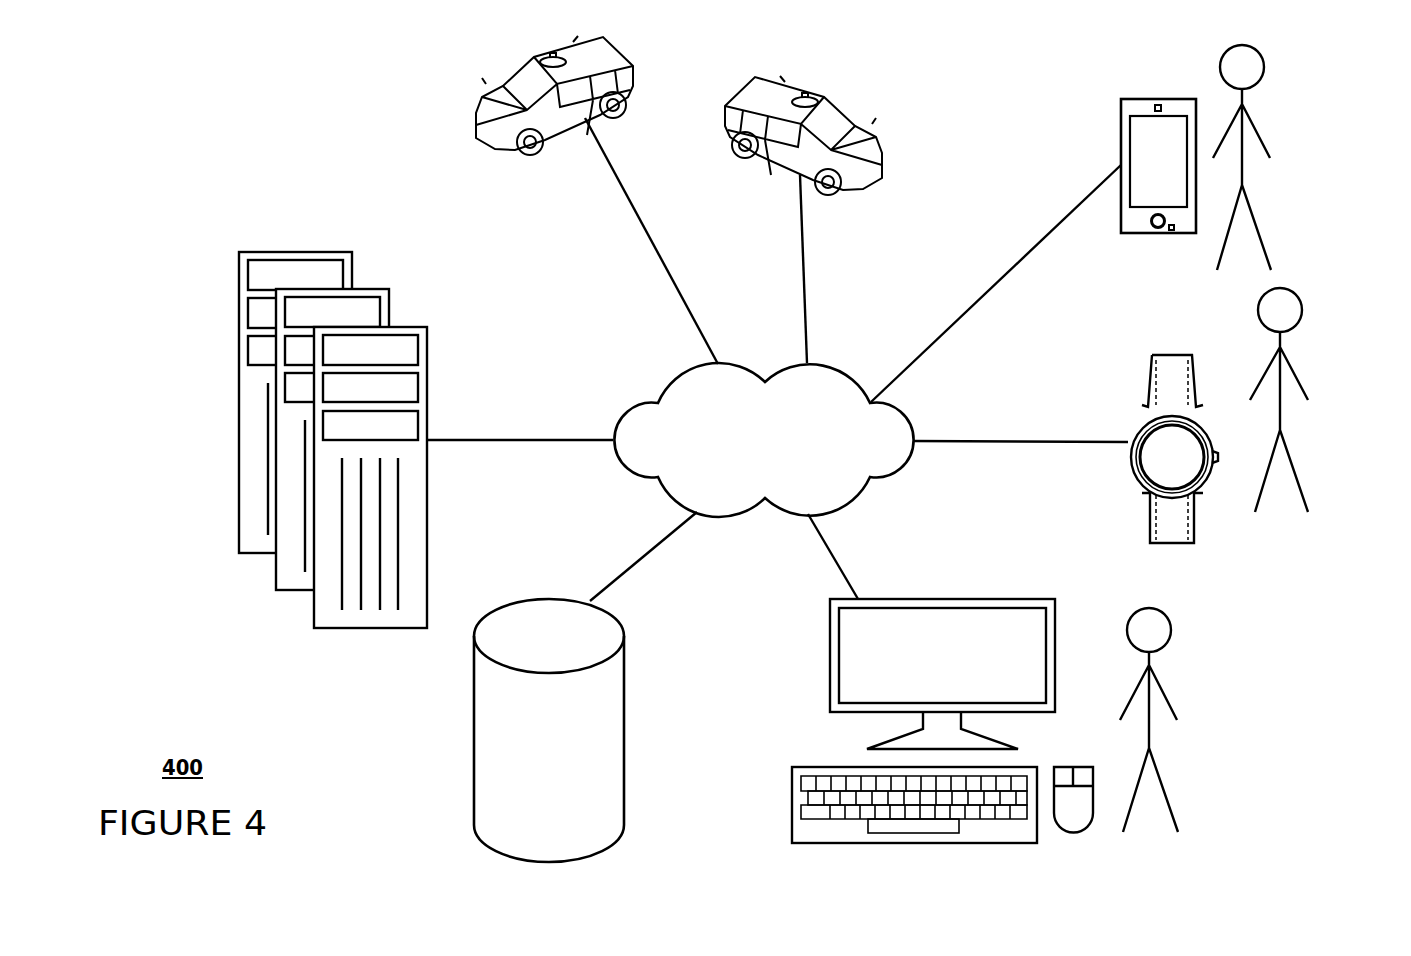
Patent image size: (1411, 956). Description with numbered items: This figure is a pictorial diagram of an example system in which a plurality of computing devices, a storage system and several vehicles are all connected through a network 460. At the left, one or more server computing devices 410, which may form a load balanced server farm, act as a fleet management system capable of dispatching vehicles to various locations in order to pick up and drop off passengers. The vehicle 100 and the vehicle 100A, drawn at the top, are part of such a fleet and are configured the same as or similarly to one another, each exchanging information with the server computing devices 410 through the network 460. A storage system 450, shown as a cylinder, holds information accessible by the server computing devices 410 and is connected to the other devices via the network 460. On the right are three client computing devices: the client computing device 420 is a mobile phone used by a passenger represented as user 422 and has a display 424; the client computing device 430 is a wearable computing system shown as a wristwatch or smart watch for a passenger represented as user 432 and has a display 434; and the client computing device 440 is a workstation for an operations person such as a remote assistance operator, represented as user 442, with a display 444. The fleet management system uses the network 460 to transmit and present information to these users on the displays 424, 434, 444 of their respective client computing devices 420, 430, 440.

The vehicle 100 is at (476, 127).
The vehicle 100A is at (885, 157).
The server computing devices 410 is at (427, 375).
The client computing device 420 is at (1109, 178).
The user 422 is at (1243, 172).
The display 424 is at (1128, 115).
The client computing device 430 is at (1132, 458).
The user 432 is at (1282, 413).
The display 434 is at (1212, 473).
The client computing device 440 is at (971, 682).
The user 442 is at (1150, 733).
The display 444 is at (1047, 625).
The storage system 450 is at (625, 742).
The network 460 is at (625, 467).